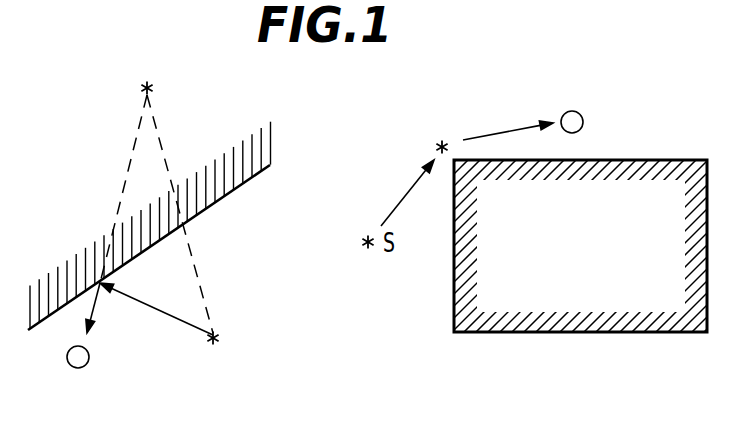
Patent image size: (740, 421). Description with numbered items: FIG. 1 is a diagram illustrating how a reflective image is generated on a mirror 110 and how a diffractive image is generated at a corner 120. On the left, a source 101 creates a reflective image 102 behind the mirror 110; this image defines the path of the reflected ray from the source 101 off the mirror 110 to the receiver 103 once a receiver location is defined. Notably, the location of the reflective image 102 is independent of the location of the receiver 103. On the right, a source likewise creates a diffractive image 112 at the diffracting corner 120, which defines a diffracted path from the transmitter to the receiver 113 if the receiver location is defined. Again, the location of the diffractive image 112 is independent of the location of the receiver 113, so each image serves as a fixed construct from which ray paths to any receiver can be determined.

The source 101 is at (211, 346).
The reflective image 102 is at (142, 87).
The receiver 103 is at (69, 365).
The mirror 110 is at (263, 169).
The diffractive image 112 is at (445, 162).
The receiver 113 is at (570, 111).
The corner 120 is at (437, 120).